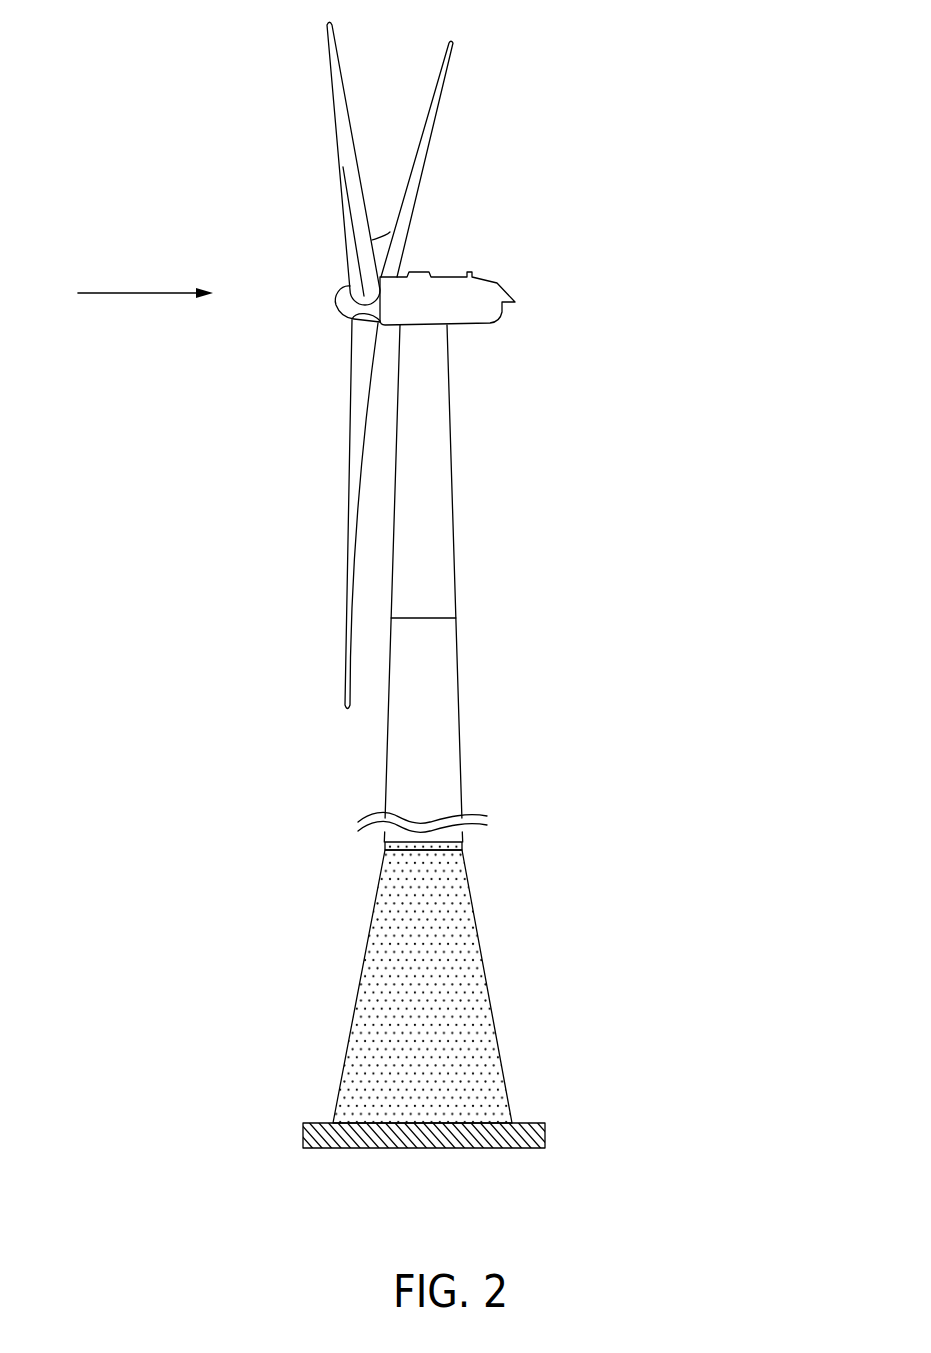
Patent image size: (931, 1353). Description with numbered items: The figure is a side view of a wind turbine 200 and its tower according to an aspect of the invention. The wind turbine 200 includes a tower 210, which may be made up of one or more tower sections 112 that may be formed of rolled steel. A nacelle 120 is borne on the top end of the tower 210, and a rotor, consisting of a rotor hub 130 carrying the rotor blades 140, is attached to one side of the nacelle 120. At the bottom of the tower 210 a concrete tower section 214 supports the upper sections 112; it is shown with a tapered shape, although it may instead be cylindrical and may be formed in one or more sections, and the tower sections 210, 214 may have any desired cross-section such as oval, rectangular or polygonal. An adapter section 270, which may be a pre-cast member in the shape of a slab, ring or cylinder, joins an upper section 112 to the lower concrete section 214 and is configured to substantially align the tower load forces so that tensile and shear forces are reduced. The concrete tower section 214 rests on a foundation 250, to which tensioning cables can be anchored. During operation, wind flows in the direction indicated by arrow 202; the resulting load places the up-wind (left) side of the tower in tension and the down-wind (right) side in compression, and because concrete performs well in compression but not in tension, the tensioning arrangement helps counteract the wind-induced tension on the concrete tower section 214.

The wind turbine 200 is at (662, 102).
The arrow 202 is at (128, 294).
The tower sections 112 is at (430, 443).
The nacelle 120 is at (507, 284).
The rotor hub 130 is at (335, 303).
The rotor blades 140 is at (343, 164).
The tower 210 is at (453, 562).
The concrete tower section 214 is at (493, 1000).
The foundation 250 is at (533, 1123).
The adapter section 270 is at (385, 845).